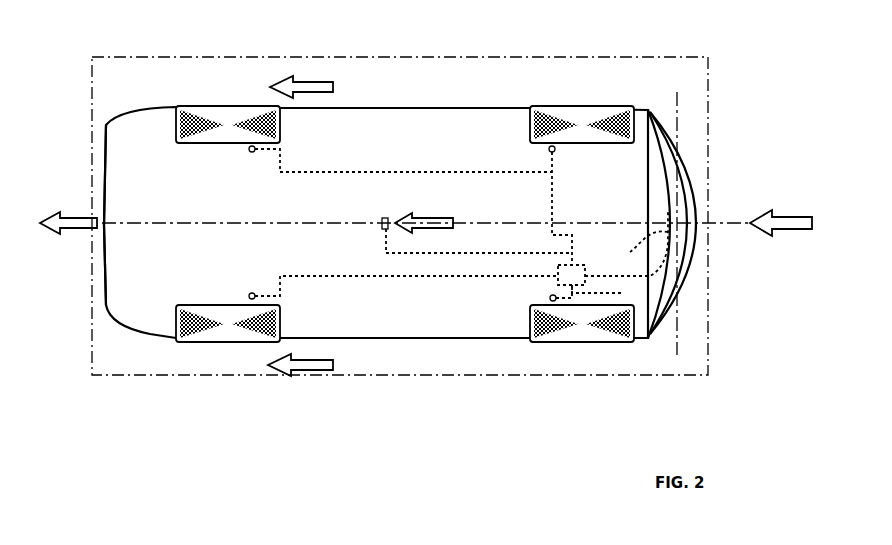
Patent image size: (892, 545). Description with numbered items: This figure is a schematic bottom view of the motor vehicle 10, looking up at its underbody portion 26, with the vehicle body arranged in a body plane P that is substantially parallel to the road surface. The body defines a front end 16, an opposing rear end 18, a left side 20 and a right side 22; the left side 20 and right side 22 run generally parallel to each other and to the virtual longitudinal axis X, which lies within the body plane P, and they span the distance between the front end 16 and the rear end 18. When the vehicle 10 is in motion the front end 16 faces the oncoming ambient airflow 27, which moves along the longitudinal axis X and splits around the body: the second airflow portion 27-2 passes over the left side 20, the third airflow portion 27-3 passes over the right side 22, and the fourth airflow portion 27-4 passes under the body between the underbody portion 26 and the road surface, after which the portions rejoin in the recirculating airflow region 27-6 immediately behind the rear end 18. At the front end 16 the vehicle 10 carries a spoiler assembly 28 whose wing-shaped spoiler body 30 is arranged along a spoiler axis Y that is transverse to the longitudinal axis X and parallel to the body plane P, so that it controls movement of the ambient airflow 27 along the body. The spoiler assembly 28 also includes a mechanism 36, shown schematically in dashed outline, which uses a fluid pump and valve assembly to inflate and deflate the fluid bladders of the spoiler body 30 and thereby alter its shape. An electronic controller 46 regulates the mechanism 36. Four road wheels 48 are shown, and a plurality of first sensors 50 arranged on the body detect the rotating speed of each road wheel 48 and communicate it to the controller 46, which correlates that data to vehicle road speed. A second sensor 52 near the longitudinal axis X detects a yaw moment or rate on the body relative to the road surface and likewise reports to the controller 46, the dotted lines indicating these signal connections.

The motor vehicle 10 is at (702, 345).
The front end 16 is at (700, 242).
The rear end 18 is at (104, 200).
The left side 20 is at (455, 340).
The right side 22 is at (422, 108).
The underbody portion 26 is at (390, 316).
The ambient airflow 27 is at (788, 217).
The second airflow portion 27-2 is at (310, 371).
The third airflow portion 27-3 is at (310, 84).
The fourth airflow portion 27-4 is at (428, 218).
The recirculating airflow region 27-6 is at (78, 233).
The spoiler assembly 28 is at (688, 296).
The spoiler body 30 is at (698, 200).
The mechanism 36 is at (626, 244).
The electronic controller 46 is at (601, 284).
The road wheels 48 is at (218, 106).
The first sensors 50 is at (252, 152).
The second sensor 52 is at (382, 229).
The body plane P is at (207, 378).
The longitudinal axis X is at (593, 222).
The spoiler axis Y is at (677, 95).